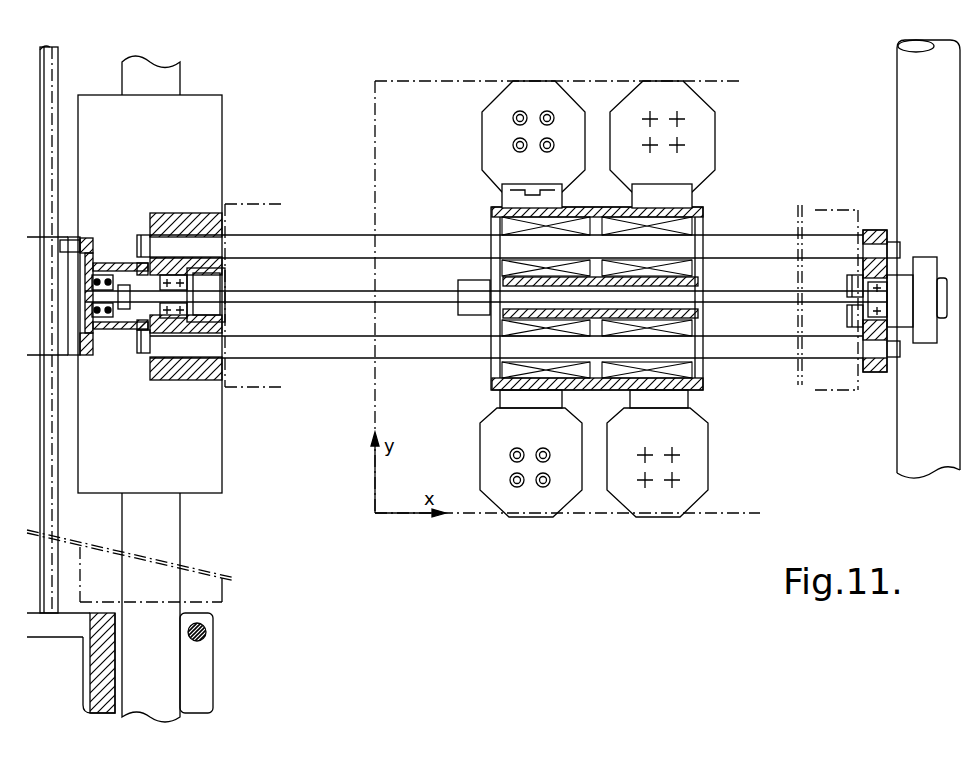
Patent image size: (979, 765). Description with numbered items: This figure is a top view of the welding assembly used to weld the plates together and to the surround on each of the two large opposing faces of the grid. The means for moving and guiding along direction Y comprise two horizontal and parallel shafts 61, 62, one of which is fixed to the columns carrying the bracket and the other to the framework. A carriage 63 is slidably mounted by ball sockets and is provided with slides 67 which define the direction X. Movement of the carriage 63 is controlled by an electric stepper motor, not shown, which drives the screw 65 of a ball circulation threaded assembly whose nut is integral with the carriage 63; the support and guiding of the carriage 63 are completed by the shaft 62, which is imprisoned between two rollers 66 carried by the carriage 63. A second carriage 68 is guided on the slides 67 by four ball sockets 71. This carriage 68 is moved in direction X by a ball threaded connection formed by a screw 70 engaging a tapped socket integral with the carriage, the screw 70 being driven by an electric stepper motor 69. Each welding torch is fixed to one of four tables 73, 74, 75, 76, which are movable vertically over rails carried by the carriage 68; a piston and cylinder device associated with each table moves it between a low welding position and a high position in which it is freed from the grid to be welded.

The shaft 61 is at (138, 88).
The shaft 62 is at (908, 157).
The carriage 63 is at (205, 175).
The screw 65 is at (48, 55).
The rollers 66 is at (920, 288).
The slides 67 is at (330, 343).
The carriage 68 is at (690, 226).
The electric stepper motor 69 is at (53, 309).
The screw 70 is at (383, 298).
The ball sockets 71 is at (505, 200).
The table 73 is at (510, 97).
The table 74 is at (640, 103).
The table 75 is at (690, 495).
The table 76 is at (558, 495).